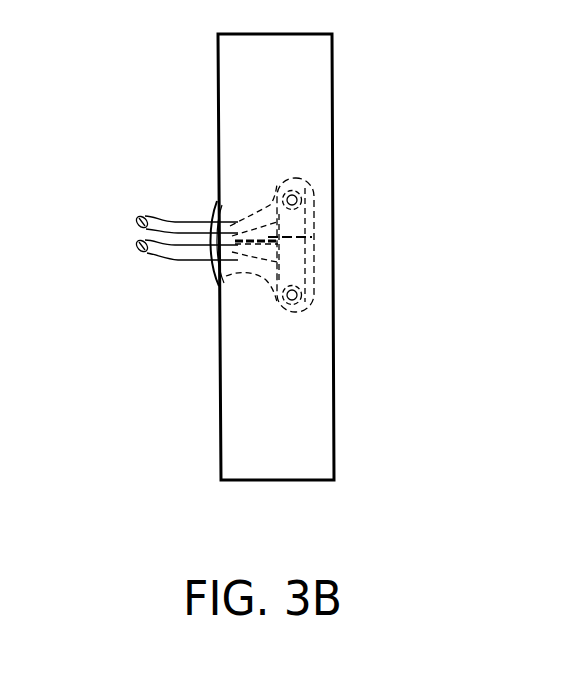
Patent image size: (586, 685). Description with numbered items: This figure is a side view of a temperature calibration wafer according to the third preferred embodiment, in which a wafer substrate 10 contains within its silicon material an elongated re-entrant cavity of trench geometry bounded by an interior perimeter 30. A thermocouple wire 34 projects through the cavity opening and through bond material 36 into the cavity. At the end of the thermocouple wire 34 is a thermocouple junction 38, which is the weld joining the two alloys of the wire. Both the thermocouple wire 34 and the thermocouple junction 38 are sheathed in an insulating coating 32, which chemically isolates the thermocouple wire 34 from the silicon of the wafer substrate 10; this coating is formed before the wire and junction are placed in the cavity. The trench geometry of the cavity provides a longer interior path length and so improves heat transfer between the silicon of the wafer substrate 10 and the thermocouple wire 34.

The wafer substrate 10 is at (276, 257).
The interior perimeter 30 is at (292, 313).
The insulating coating 32 is at (276, 200).
The thermocouple wire 34 is at (166, 262).
The bond material 36 is at (218, 208).
The thermocouple junction 38 is at (288, 233).